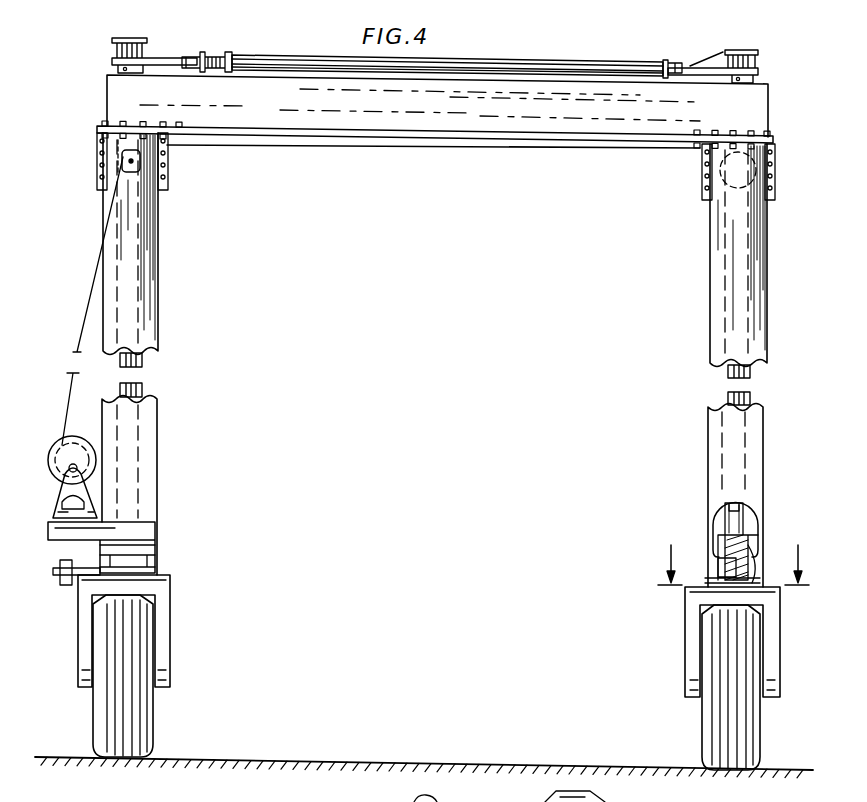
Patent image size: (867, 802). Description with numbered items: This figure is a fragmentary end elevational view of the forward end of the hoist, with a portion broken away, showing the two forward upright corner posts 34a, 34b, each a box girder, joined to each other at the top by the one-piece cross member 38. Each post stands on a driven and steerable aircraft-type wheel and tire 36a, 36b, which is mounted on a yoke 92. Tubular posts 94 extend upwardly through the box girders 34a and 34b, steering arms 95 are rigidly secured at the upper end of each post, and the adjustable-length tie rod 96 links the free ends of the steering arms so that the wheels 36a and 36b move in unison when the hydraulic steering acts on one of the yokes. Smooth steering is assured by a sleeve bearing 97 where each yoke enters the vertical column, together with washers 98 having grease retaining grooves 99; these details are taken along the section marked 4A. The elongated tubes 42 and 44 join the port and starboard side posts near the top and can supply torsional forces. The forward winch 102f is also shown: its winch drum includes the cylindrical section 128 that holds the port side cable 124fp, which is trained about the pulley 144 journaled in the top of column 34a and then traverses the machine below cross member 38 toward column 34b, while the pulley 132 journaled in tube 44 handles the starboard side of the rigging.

The cross member 38 is at (476, 130).
The port side cable 124fp is at (300, 145).
The tie rod 96 is at (318, 58).
The steering arms 95 is at (163, 53).
The upright corner post 34a is at (157, 265).
The upright corner post 34b is at (764, 251).
The pulley 144 is at (120, 160).
The elongated tube 44 is at (118, 152).
The elongated tube 42 is at (770, 163).
The tubular posts 94 is at (142, 388).
The winch drum section 128 is at (58, 452).
The forward winch 102f is at (43, 502).
The yoke 92 is at (162, 589).
The wheel and tire 36a is at (100, 718).
The wheel and tire 36b is at (757, 742).
The sleeve bearing 97 is at (746, 521).
The washers 98 is at (758, 588).
The section line 4A is at (729, 565).
The pulley 132 is at (410, 799).
The grease retaining grooves 99 is at (551, 792).